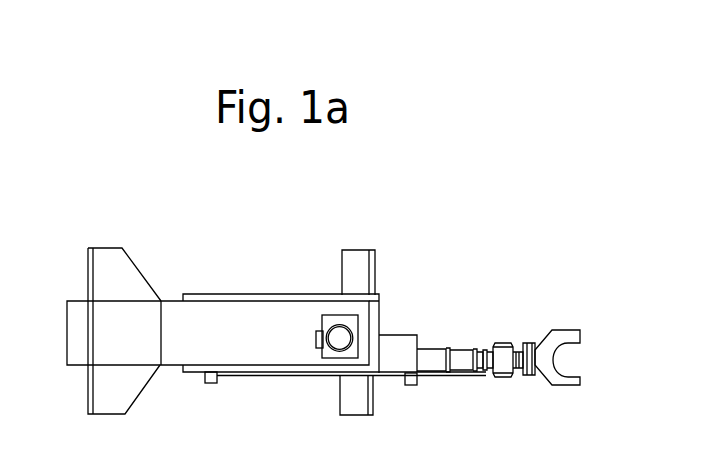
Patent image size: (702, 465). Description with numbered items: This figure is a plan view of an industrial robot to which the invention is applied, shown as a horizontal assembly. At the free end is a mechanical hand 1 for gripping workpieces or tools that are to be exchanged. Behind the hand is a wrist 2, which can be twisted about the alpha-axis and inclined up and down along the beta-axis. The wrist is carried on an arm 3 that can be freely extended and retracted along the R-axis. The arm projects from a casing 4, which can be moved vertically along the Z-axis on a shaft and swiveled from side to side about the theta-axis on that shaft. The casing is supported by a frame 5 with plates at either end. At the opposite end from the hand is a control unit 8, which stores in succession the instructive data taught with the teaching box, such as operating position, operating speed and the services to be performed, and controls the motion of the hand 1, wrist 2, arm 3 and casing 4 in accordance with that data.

The mechanical hand 1 is at (570, 338).
The wrist 2 is at (533, 340).
The arm 3 is at (503, 340).
The casing 4 is at (400, 337).
The frame 5 is at (175, 306).
The control unit 8 is at (75, 343).